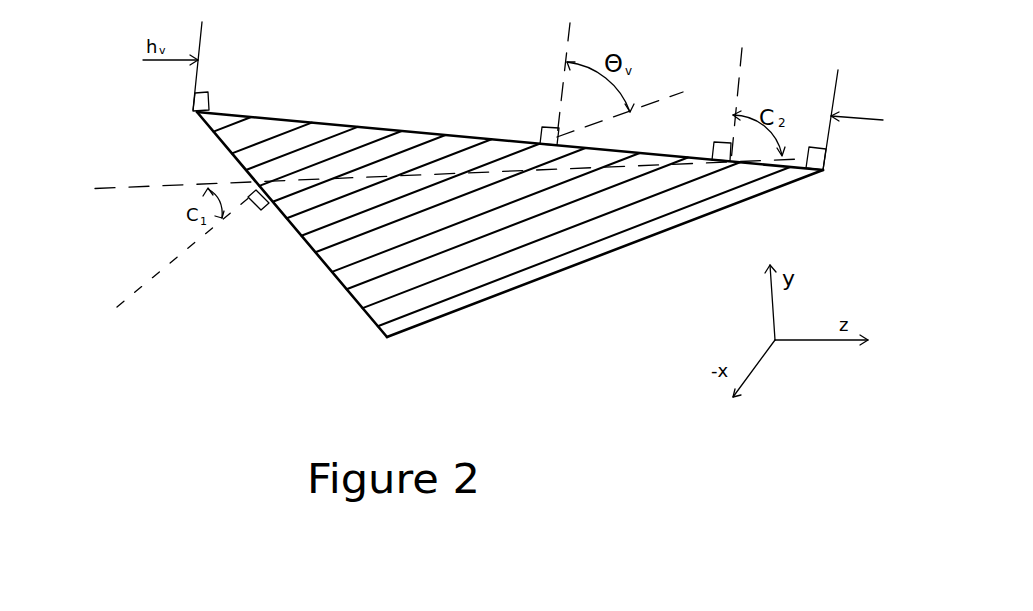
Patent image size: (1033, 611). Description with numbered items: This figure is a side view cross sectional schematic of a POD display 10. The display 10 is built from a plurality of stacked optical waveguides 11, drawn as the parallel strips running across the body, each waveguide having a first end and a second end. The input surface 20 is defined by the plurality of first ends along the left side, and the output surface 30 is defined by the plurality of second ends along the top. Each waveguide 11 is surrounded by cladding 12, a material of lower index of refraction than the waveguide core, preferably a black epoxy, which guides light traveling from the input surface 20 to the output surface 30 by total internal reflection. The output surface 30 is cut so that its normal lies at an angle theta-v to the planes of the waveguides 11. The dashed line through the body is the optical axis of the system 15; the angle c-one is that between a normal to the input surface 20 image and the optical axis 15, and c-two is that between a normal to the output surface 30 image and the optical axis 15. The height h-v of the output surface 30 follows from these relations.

The POD display 10 is at (467, 219).
The stacked optical waveguides 11 is at (407, 324).
The cladding 12 is at (509, 272).
The optical axis of the system 15 is at (67, 190).
The input surface 20 is at (229, 150).
The output surface 30 is at (275, 119).